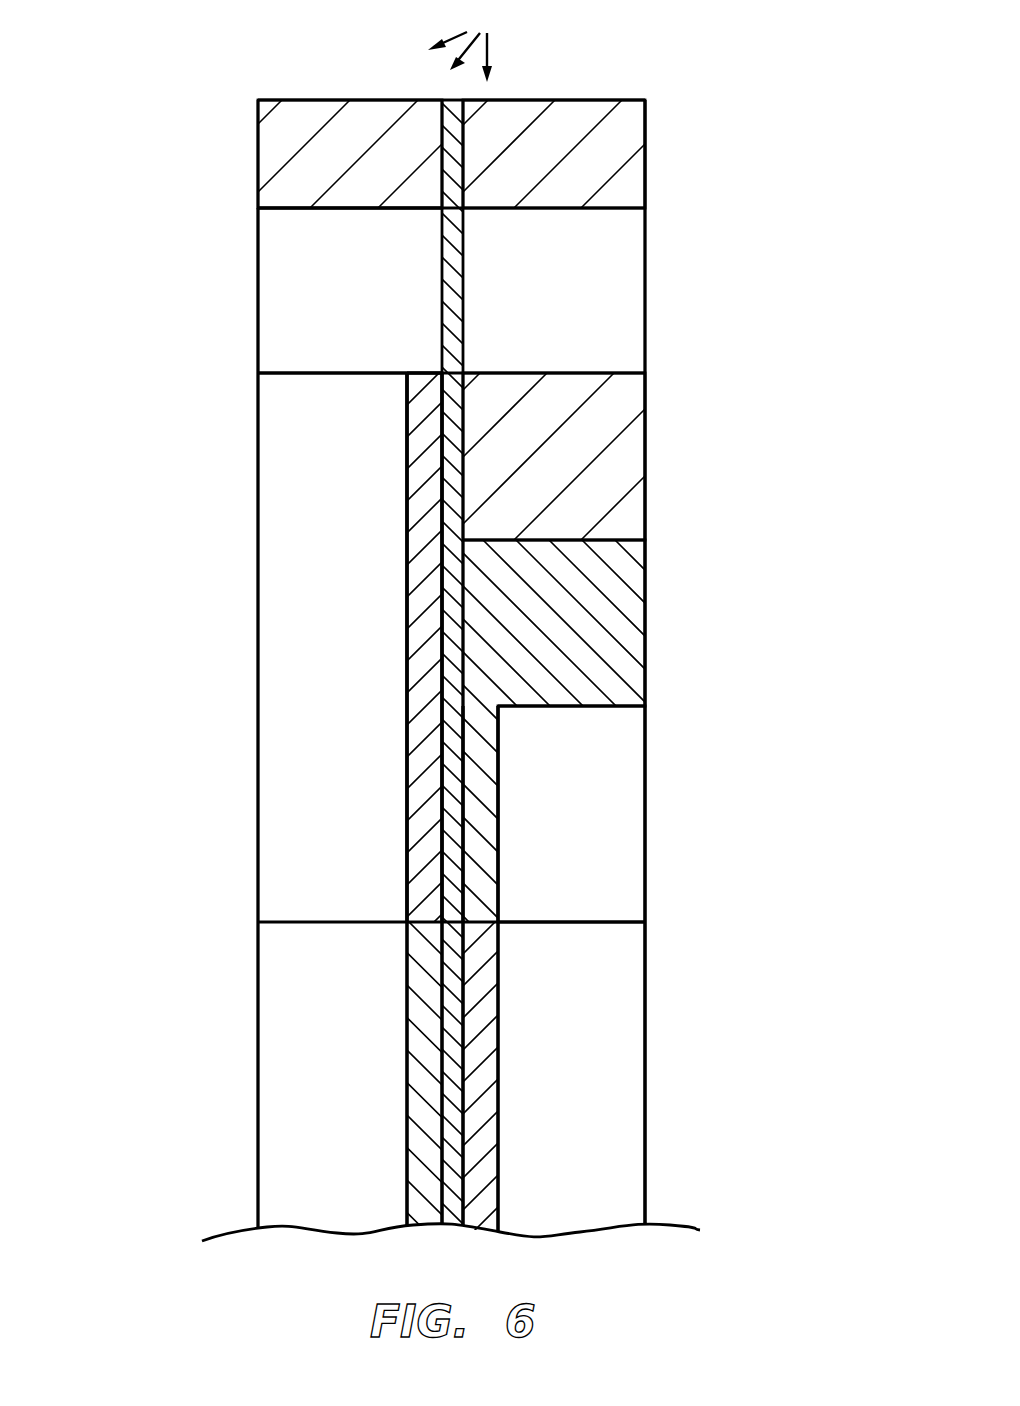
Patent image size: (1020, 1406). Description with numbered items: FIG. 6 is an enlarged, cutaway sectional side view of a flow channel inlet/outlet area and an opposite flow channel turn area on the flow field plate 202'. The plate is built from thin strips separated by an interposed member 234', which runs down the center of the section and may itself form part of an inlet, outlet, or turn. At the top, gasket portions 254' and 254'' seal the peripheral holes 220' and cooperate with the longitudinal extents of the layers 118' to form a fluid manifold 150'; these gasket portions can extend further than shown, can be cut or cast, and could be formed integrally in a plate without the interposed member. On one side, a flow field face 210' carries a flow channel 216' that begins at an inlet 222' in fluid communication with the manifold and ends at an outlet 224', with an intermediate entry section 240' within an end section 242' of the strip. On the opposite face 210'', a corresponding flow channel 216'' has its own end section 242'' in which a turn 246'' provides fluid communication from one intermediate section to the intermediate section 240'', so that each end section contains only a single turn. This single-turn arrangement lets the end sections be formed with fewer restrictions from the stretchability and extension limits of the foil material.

The layer 118' is at (474, 42).
The fluid manifold 150' is at (284, 290).
The flow field plate 202' is at (487, 670).
The flow field face 210' is at (284, 799).
The flow field face 210'' is at (621, 969).
The flow channel 216' is at (386, 800).
The flow channel 216'' is at (639, 969).
The peripheral hole 220' is at (386, 664).
The inlet 222' is at (248, 647).
The outlet 224' is at (424, 647).
The interposed member 234' is at (565, 613).
The intermediate entry section 240' is at (284, 1084).
The intermediate section 240'' is at (621, 1096).
The end section 242' is at (284, 659).
The end section 242'' is at (525, 731).
The turn 246'' is at (621, 814).
The gasket portion 254' is at (284, 154).
The gasket portion 254'' is at (621, 320).